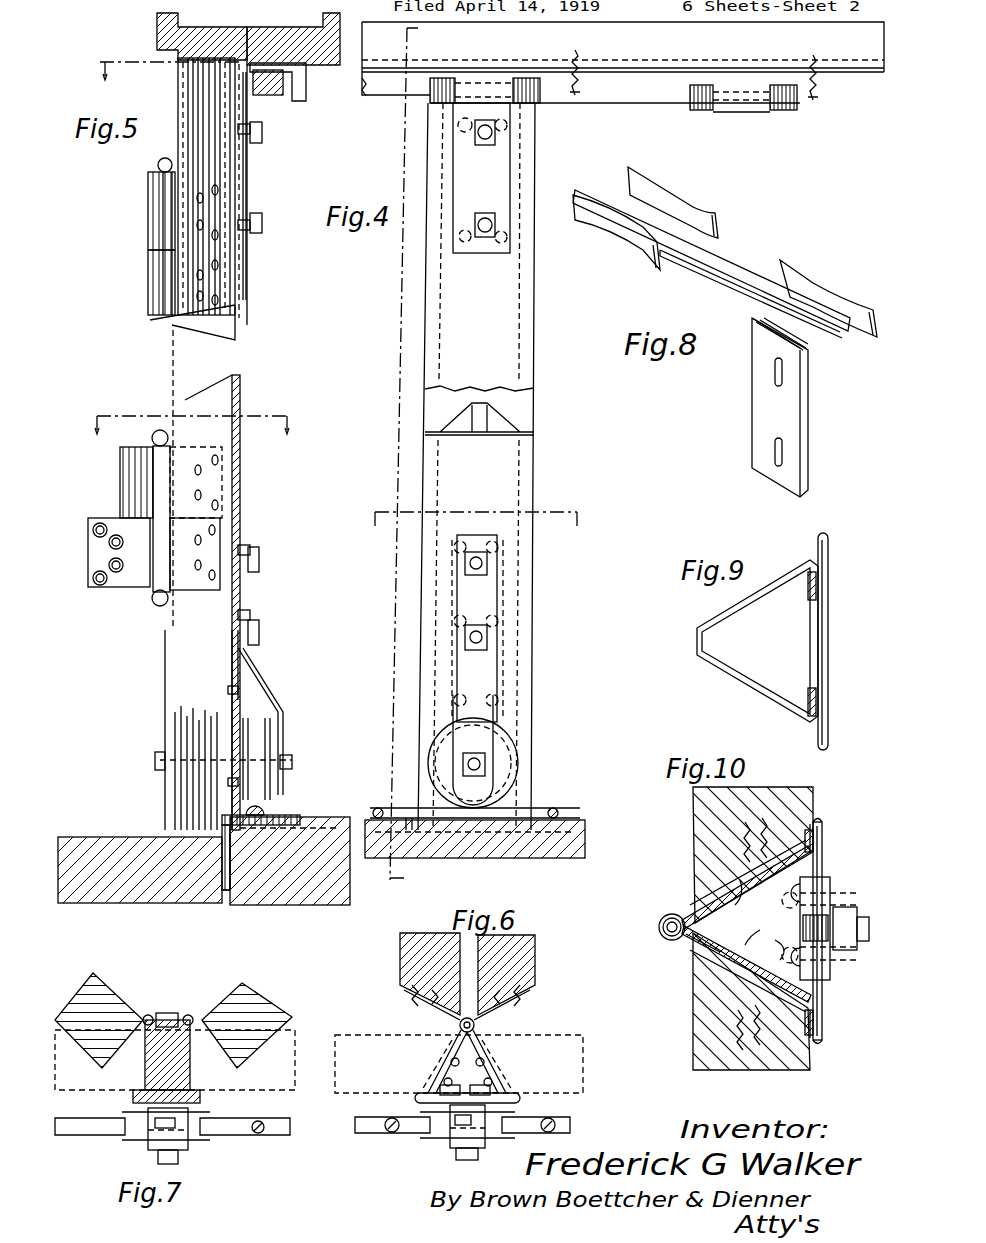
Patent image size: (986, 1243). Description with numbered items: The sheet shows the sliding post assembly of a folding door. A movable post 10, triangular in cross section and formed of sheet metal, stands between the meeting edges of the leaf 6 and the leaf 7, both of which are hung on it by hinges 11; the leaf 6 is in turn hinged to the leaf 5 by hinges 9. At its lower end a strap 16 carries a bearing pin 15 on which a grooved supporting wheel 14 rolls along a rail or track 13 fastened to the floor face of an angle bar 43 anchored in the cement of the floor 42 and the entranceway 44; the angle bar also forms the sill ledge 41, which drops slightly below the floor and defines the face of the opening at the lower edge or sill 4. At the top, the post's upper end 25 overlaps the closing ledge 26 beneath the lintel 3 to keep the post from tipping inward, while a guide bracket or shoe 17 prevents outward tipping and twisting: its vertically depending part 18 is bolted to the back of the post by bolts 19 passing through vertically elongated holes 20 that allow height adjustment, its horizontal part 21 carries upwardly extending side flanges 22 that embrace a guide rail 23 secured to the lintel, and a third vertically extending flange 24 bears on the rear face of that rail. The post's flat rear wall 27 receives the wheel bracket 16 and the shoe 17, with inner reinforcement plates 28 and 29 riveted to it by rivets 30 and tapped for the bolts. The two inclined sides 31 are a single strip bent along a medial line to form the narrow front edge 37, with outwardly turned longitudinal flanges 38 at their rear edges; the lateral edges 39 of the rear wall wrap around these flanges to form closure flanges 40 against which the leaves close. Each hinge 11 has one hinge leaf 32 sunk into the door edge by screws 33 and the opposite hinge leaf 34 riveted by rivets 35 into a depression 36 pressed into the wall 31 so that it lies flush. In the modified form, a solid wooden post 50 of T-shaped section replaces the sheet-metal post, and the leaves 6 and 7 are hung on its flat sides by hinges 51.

In FIG. 5, the lintel 3 is at (195, 40).
In FIG. 4, the lintel 3 is at (650, 64).
In FIG. 5, the sill 4 is at (225, 816).
In FIG. 4, the sill 4 is at (410, 818).
In FIG. 4, the leaf 5 is at (395, 462).
In FIG. 4, the leaf 6 is at (472, 514).
In FIG. 10, the leaf 6 is at (693, 1038).
In FIG. 6, the leaf 6 is at (400, 962).
In FIG. 7, the leaf 6 is at (112, 983).
In FIG. 10, the leaf 7 is at (693, 812).
In FIG. 6, the leaf 7 is at (535, 964).
In FIG. 7, the leaf 7 is at (222, 994).
In FIG. 5, the hinges 9 is at (314, 86).
In FIG. 5, the post 10 is at (242, 328).
In FIG. 4, the post 10 is at (537, 386).
In FIG. 9, the post 10 is at (713, 613).
In FIG. 10, the post 10 is at (705, 904).
In FIG. 6, the post 10 is at (520, 1098).
In FIG. 5, the hinges 11 is at (158, 213).
In FIG. 10, the hinges 11 is at (660, 920).
In FIG. 6, the hinges 11 is at (460, 1027).
In FIG. 5, the rail or track 13 is at (264, 810).
In FIG. 4, the rail or track 13 is at (380, 818).
In FIG. 6, the rail or track 13 is at (380, 1133).
In FIG. 7, the rail or track 13 is at (240, 1136).
In FIG. 5, the grooved supporting wheel 14 is at (268, 730).
In FIG. 4, the grooved supporting wheel 14 is at (500, 766).
In FIG. 6, the grooved supporting wheel 14 is at (450, 1140).
In FIG. 7, the grooved supporting wheel 14 is at (125, 1140).
In FIG. 5, the bearing pin 15 is at (270, 754).
In FIG. 4, the bearing pin 15 is at (486, 769).
In FIG. 5, the strap 16 is at (280, 690).
In FIG. 4, the strap 16 is at (458, 594).
In FIG. 5, the guide bracket or shoe 17 is at (306, 98).
In FIG. 4, the guide bracket or shoe 17 is at (570, 103).
In FIG. 8, the guide bracket or shoe 17 is at (742, 264).
In FIG. 8, the vertically depending part 18 is at (803, 421).
In FIG. 5, the bolts 19 is at (262, 142).
In FIG. 4, the bolts 19 is at (475, 131).
In FIG. 10, the bolts 19 is at (845, 950).
In FIG. 8, the vertically elongated holes 20 is at (772, 368).
In FIG. 8, the horizontal part 21 is at (702, 278).
In FIG. 8, the side flanges 22 is at (672, 196).
In FIG. 5, the guide rail 23 is at (266, 99).
In FIG. 4, the guide rail 23 is at (815, 100).
In FIG. 8, the third vertically extending flange 24 is at (815, 284).
In FIG. 5, the upper end 25 is at (192, 92).
In FIG. 5, the closing ledge 26 is at (243, 31).
In FIG. 9, the flat side 27 is at (827, 636).
In FIG. 10, the flat side 27 is at (823, 870).
In FIG. 5, the reinforcement plate 28 is at (238, 658).
In FIG. 10, the reinforcement plate 28 is at (811, 928).
In FIG. 5, the reinforcement plate 29 is at (246, 152).
In FIG. 5, the rivets 30 is at (240, 120).
In FIG. 4, the rivets 30 is at (504, 129).
In FIG. 10, the rivets 30 is at (806, 888).
In FIG. 10, the inclined sides 31 is at (746, 941).
In FIG. 10, the hinge leaf 32 is at (725, 896).
In FIG. 6, the hinge leaf 32 is at (484, 1022).
In FIG. 10, the screws 33 is at (745, 860).
In FIG. 6, the screws 33 is at (418, 998).
In FIG. 10, the hinge leaf 34 is at (700, 950).
In FIG. 6, the hinge leaf 34 is at (490, 1058).
In FIG. 10, the rivets 35 is at (779, 927).
In FIG. 10, the depression 36 is at (744, 908).
In FIG. 10, the narrow front edge 37 is at (662, 934).
In FIG. 9, the longitudinal flanges 38 is at (816, 584).
In FIG. 10, the longitudinal flanges 38 is at (815, 842).
In FIG. 10, the lateral edges 39 is at (822, 826).
In FIG. 10, the closure flanges 40 is at (820, 820).
In FIG. 5, the sill ledge 41 is at (230, 840).
In FIG. 5, the floor 42 is at (320, 817).
In FIG. 4, the floor 42 is at (587, 822).
In FIG. 5, the angle bar 43 is at (232, 870).
In FIG. 5, the entranceway 44 is at (125, 837).
In FIG. 7, the wooden post 50 is at (190, 1085).
In FIG. 7, the hinges 51 is at (186, 1014).